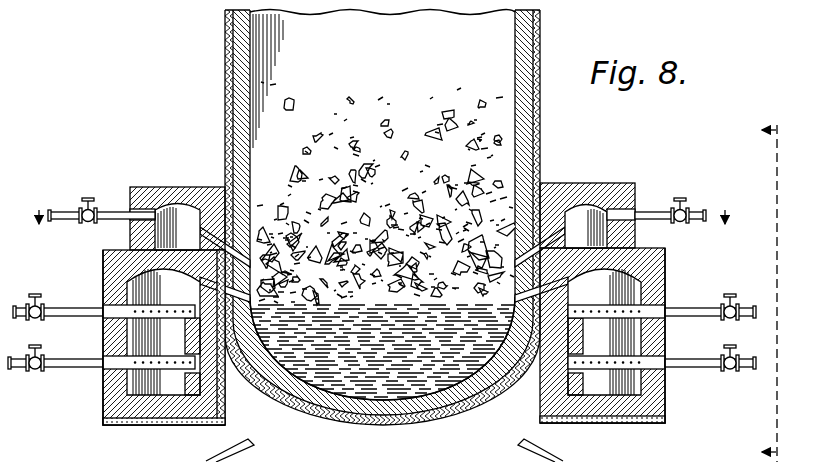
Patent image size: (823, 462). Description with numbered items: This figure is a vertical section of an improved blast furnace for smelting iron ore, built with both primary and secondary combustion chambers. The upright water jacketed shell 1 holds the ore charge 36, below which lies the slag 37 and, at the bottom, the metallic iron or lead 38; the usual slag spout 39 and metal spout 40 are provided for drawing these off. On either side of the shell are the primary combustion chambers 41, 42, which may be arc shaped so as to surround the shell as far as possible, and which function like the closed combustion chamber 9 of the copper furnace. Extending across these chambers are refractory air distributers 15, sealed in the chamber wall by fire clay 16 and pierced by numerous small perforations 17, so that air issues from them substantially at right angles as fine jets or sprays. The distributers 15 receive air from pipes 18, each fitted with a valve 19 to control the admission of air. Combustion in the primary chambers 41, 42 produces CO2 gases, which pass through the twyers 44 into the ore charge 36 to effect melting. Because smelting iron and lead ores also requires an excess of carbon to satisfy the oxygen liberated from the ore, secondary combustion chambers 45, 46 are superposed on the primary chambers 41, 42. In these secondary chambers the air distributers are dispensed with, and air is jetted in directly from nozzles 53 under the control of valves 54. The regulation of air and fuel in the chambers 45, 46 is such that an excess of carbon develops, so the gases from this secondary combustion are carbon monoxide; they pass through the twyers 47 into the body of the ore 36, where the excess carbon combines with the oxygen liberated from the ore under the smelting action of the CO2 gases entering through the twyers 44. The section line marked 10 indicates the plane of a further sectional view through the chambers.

The water jacketed shell 1 is at (541, 100).
The closed combustion chamber 9 is at (381, 217).
The section line 10 is at (772, 282).
The air distributing tube 15 is at (103, 293).
The fire clay 16 is at (665, 352).
The perforations 17 is at (182, 363).
The air pipe 18 is at (702, 358).
The valve 19 is at (736, 291).
The ore charge 36 is at (432, 176).
The slag 37 is at (447, 297).
The metallic iron or lead 38 is at (437, 415).
The slag spout 39 is at (303, 403).
The metal spout 40 is at (365, 340).
The primary combustion chamber 41 is at (103, 414).
The primary combustion chamber 42 is at (646, 423).
The twyer 44 is at (238, 373).
The secondary combustion chamber 45 is at (165, 187).
The secondary combustion chamber 46 is at (584, 183).
The twyer 47 is at (253, 258).
The air nozzle 53 is at (118, 211).
The valve 54 is at (88, 198).